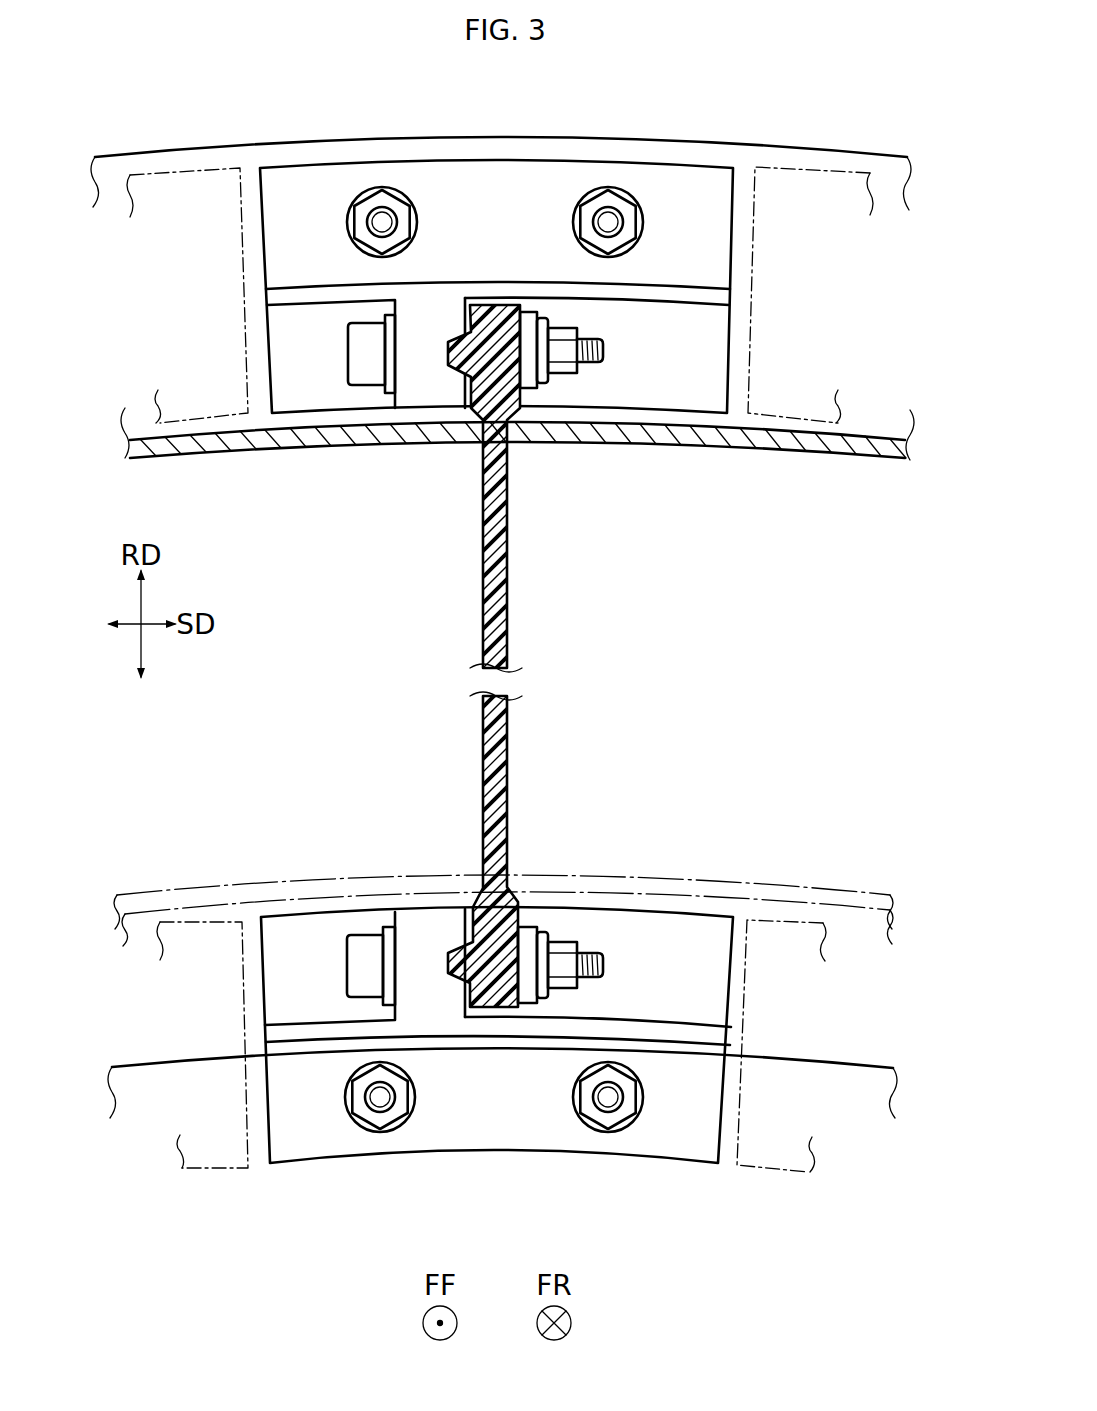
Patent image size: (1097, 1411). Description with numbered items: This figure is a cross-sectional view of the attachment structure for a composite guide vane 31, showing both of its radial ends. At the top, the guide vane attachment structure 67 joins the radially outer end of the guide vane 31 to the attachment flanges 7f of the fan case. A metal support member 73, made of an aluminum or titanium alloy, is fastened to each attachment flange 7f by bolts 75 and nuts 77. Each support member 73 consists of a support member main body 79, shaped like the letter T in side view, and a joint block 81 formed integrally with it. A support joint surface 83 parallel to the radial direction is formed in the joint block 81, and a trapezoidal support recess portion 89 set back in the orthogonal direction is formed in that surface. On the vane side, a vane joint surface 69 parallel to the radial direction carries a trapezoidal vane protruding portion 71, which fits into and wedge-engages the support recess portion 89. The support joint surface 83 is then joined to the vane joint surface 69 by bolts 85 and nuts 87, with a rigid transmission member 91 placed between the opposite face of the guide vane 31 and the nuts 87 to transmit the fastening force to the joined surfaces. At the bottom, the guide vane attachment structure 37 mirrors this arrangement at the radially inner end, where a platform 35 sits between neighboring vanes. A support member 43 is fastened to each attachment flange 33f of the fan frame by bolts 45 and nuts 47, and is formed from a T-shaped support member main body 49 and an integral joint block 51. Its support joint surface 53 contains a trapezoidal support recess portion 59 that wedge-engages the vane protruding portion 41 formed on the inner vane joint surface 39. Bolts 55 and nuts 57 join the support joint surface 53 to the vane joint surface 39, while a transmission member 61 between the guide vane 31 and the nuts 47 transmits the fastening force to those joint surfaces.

The attachment flange 7f is at (276, 143).
The support member 73 is at (138, 216).
The support member main body 79 is at (500, 180).
The nut 77 is at (372, 200).
The bolt 75 is at (392, 218).
The bolt 85 is at (365, 375).
The joint block 81 is at (408, 398).
The support recess portion 89 is at (462, 320).
The support joint surface 83 is at (487, 305).
The guide vane 31 is at (531, 656).
The vane protruding portion 71 is at (452, 342).
The vane joint surface 69 is at (470, 400).
The transmission member 91 is at (537, 392).
The nut 87 is at (562, 380).
The guide vane attachment structure 67 is at (185, 418).
The platform 35 is at (278, 885).
The guide vane attachment structure 37 is at (188, 900).
The support member main body 49 is at (478, 1152).
The nut 47 is at (362, 1113).
The bolt 45 is at (378, 1105).
The bolt 55 is at (355, 940).
The joint block 51 is at (395, 930).
The support recess portion 59 is at (466, 978).
The support joint surface 53 is at (480, 1010).
The vane protruding portion 41 is at (447, 955).
The vane joint surface 39 is at (473, 938).
The transmission member 61 is at (530, 928).
The nut 57 is at (560, 945).
The attachment flange 33f is at (795, 1063).
The support member 43 is at (210, 1172).